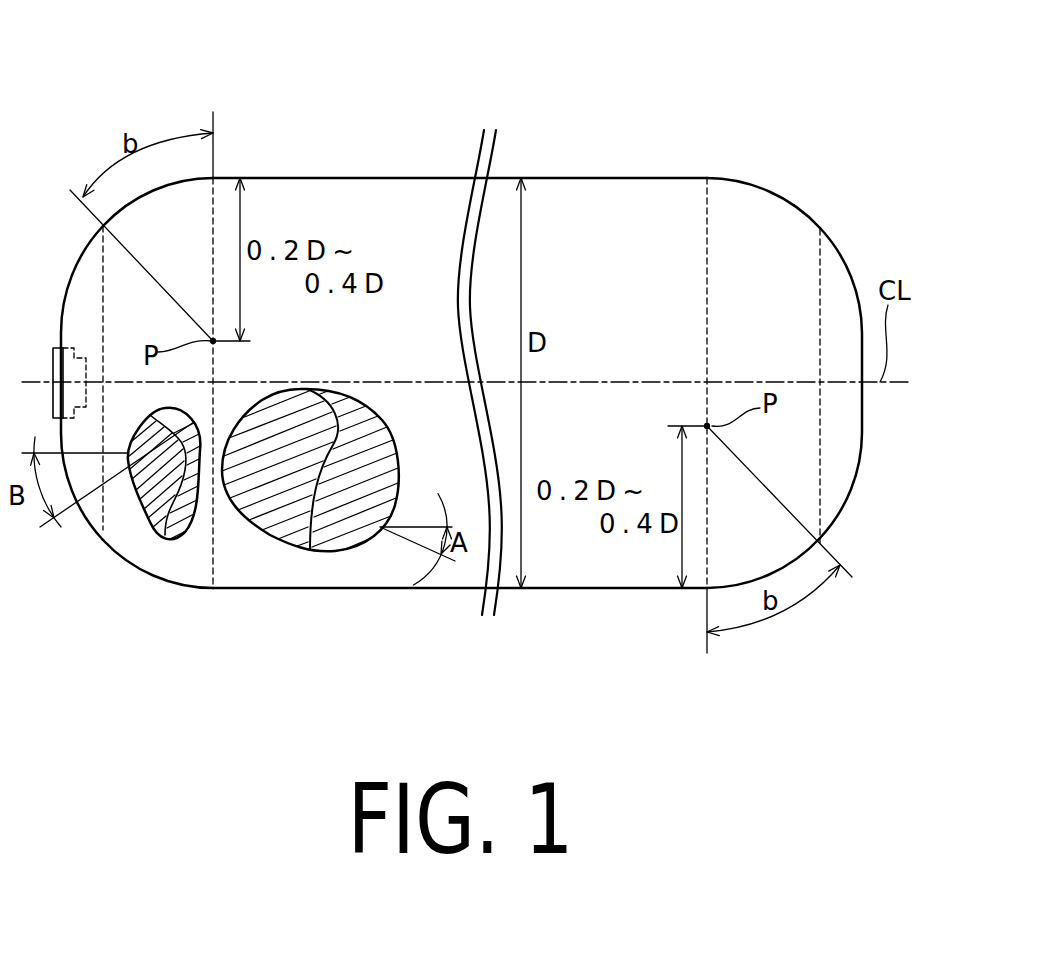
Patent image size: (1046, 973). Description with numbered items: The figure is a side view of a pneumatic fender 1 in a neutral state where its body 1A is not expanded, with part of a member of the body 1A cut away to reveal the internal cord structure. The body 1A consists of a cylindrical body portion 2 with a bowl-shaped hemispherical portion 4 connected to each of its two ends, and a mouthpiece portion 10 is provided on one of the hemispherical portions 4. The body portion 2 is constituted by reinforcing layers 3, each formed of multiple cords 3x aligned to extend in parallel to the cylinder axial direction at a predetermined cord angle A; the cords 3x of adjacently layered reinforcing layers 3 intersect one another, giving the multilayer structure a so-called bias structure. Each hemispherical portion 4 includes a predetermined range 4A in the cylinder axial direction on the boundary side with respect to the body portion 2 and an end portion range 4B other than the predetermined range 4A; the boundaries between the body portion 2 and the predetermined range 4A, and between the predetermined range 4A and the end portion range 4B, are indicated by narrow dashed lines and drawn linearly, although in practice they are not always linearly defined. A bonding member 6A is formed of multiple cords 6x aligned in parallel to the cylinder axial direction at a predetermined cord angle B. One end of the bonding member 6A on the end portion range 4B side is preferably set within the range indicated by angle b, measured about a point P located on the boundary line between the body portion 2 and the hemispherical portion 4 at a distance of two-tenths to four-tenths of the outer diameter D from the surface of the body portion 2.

The pneumatic fender 1 is at (455, 356).
The body 1A is at (591, 180).
The body portion 2 is at (381, 192).
The reinforcing layers 3 is at (310, 520).
The cords 3x is at (262, 493).
The hemispherical portion 4 is at (455, 385).
The predetermined range 4A is at (764, 197).
The end portion range 4B is at (840, 250).
The bonding member 6A is at (194, 422).
The cords 6x is at (201, 463).
The mouthpiece portion 10 is at (52, 352).